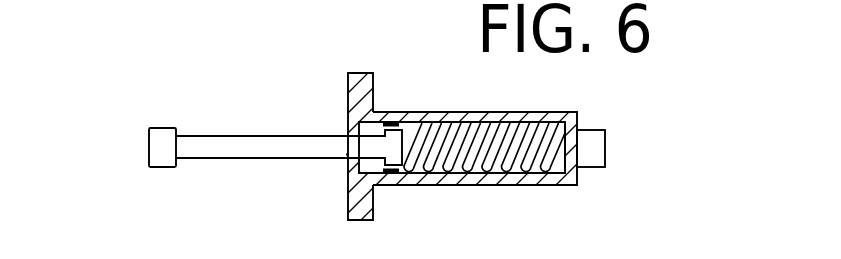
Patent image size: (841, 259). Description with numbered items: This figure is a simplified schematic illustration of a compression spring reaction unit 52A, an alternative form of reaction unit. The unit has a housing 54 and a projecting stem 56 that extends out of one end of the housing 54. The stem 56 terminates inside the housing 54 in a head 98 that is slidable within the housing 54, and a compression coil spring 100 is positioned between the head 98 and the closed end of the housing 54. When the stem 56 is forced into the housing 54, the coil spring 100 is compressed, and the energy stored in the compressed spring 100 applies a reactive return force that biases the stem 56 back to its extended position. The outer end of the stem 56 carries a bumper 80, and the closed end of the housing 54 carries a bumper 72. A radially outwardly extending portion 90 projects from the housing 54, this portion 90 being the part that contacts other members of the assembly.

The bumper 80 is at (160, 147).
The stem 56 is at (259, 147).
The radially outwardly extending portion 90 is at (355, 78).
The compression spring reaction unit 52A is at (518, 113).
The bumper 72 is at (598, 148).
The head 98 is at (391, 172).
The compression coil spring 100 is at (472, 160).
The housing 54 is at (548, 177).